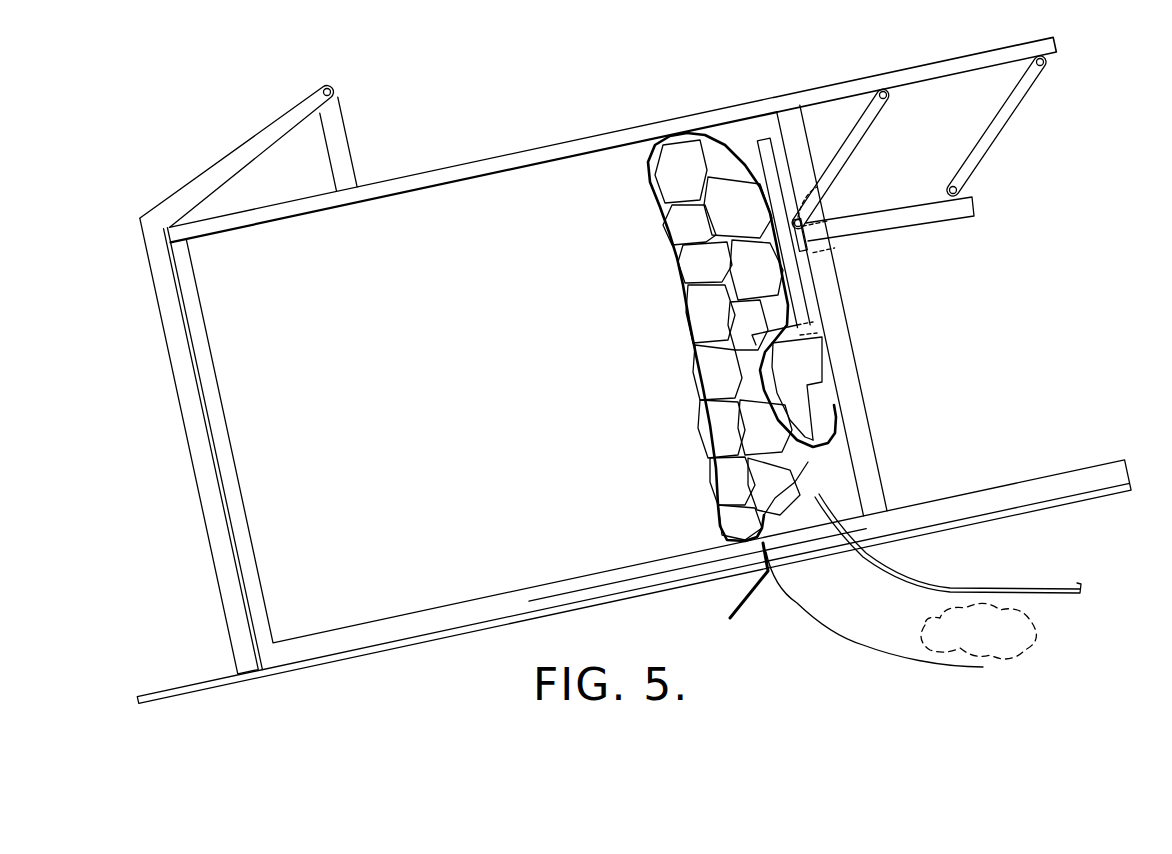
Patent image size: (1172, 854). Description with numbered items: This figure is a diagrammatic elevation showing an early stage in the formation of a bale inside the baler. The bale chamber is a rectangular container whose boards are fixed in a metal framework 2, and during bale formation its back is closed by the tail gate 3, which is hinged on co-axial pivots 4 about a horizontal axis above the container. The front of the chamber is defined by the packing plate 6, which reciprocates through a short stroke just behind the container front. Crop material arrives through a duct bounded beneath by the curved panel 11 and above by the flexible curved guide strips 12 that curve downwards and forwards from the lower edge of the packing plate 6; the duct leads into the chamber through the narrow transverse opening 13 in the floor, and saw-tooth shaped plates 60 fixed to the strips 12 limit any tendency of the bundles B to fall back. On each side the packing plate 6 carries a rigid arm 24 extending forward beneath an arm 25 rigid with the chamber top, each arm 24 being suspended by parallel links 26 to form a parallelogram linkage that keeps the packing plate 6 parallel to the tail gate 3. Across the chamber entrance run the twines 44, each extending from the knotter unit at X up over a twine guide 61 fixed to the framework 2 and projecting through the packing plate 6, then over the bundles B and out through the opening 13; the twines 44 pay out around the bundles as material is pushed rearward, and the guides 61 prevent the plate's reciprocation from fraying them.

The metal framework 2 is at (497, 163).
The tail gate 3 is at (187, 402).
The pivots 4 is at (333, 92).
The packing plate 6 is at (768, 150).
The curved panel 11 is at (855, 640).
The flexible curved guide strips 12 is at (932, 585).
The transverse opening 13 is at (802, 548).
The rigid arms 24 is at (903, 217).
The arms 25 is at (963, 64).
The parallel links 26 is at (845, 155).
The twines 44 is at (682, 298).
The saw-tooth shaped plates 60 is at (785, 510).
The twine guide 61 is at (752, 363).